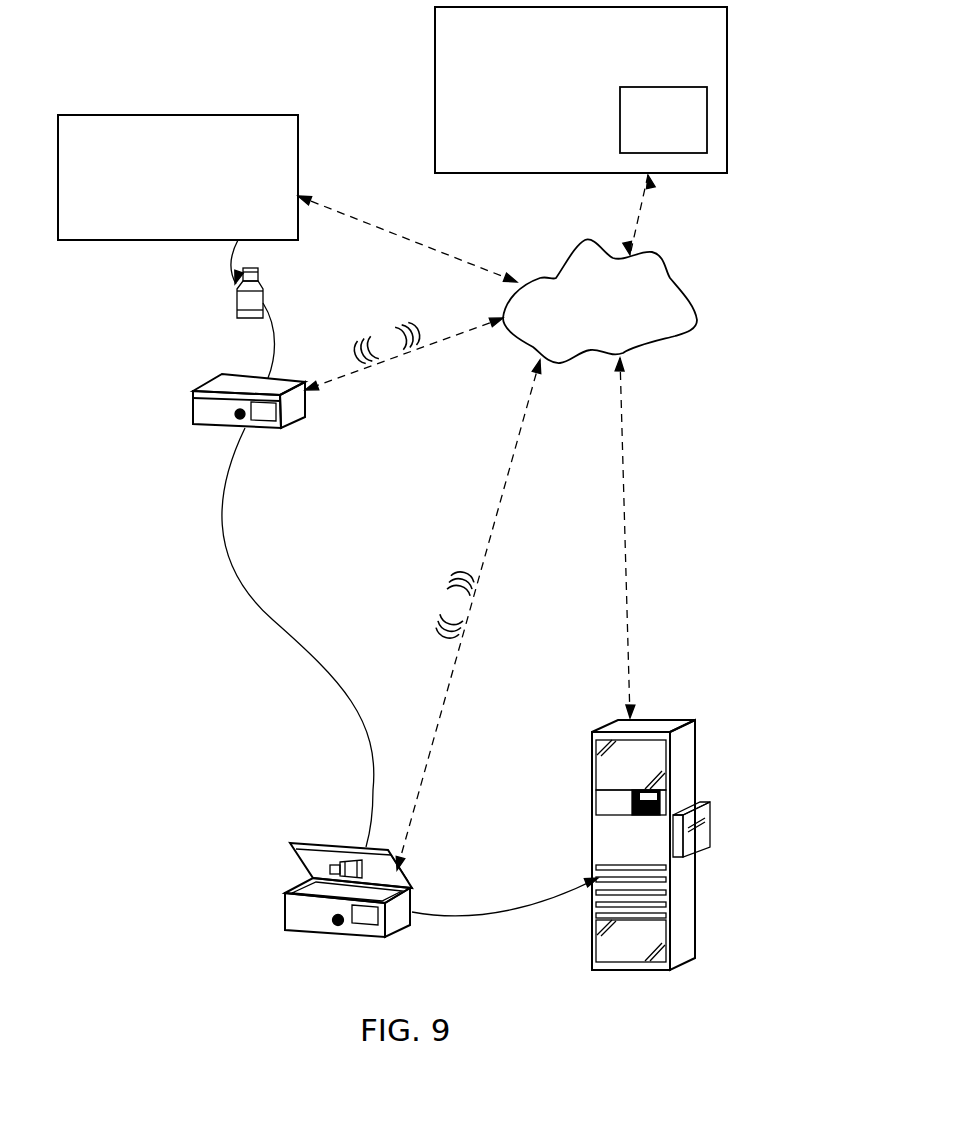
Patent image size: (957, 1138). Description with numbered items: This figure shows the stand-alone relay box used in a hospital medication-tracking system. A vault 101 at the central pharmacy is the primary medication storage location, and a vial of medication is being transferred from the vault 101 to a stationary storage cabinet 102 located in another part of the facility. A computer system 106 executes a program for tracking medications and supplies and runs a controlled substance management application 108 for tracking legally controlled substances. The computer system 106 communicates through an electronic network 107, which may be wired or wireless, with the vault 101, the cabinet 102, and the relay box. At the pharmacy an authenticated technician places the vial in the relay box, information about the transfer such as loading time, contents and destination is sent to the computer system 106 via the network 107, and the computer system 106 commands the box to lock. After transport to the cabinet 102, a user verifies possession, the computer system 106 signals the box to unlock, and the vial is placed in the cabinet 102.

The vault 101 is at (233, 127).
The computer system 106 is at (445, 25).
The controlled substance management (CSM) application 108 is at (690, 140).
The electronic network 107 is at (577, 258).
The storage cabinet 102 is at (608, 773).